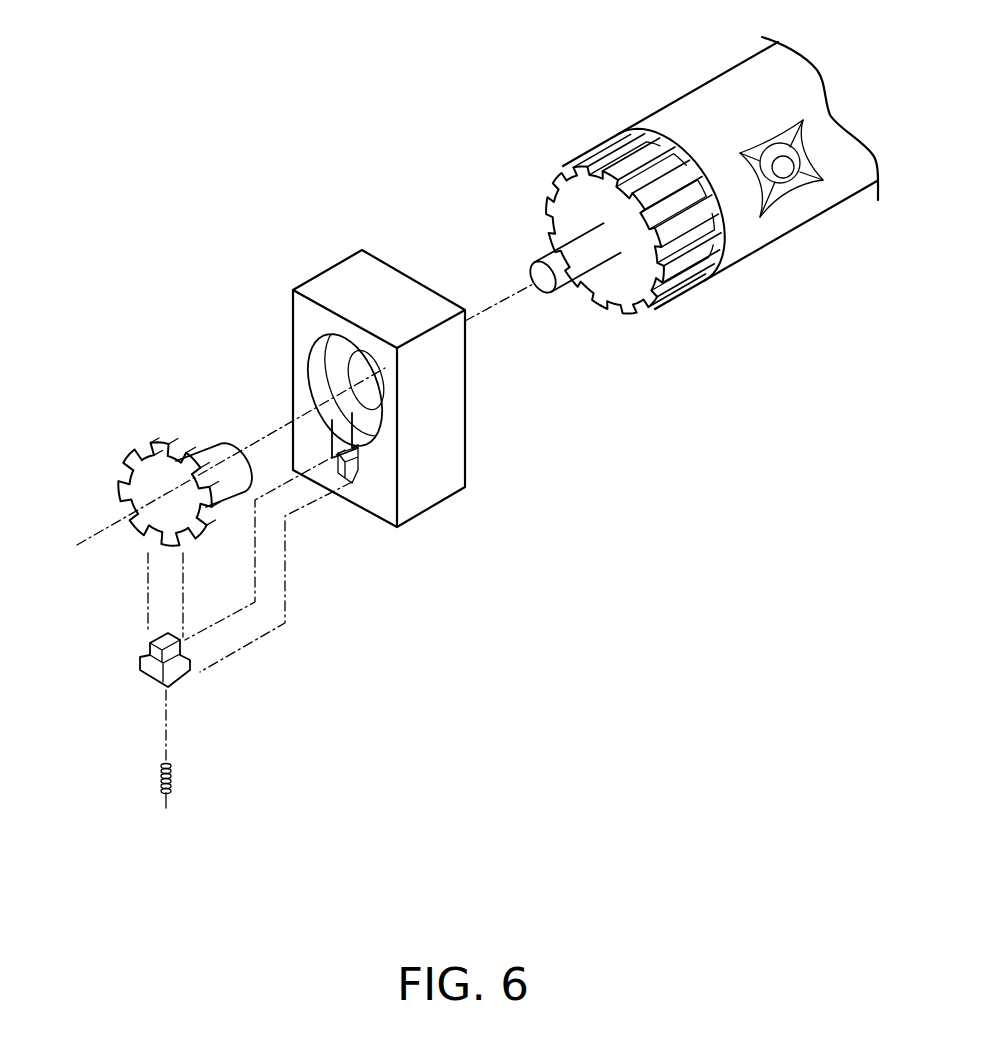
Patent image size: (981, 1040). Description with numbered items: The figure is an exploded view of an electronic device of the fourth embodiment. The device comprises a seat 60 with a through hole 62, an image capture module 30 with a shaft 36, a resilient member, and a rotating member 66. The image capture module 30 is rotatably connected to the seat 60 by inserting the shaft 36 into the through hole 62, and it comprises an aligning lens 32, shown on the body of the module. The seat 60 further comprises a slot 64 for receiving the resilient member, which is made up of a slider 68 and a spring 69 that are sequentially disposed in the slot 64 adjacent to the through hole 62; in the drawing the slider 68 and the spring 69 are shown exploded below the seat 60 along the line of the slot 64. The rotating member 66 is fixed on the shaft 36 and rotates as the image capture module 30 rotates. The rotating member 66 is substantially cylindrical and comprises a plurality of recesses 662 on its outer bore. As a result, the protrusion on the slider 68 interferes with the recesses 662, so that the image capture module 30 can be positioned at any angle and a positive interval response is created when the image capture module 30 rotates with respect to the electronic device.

The image capture module 30 is at (688, 138).
The aligning lens 32 is at (778, 165).
The shaft 36 is at (555, 258).
The seat 60 is at (365, 287).
The through hole 62 is at (322, 383).
The slot 64 is at (368, 430).
The rotating member 66 is at (148, 480).
The recesses 662 is at (167, 438).
The slider 68 is at (182, 673).
The spring 69 is at (172, 775).